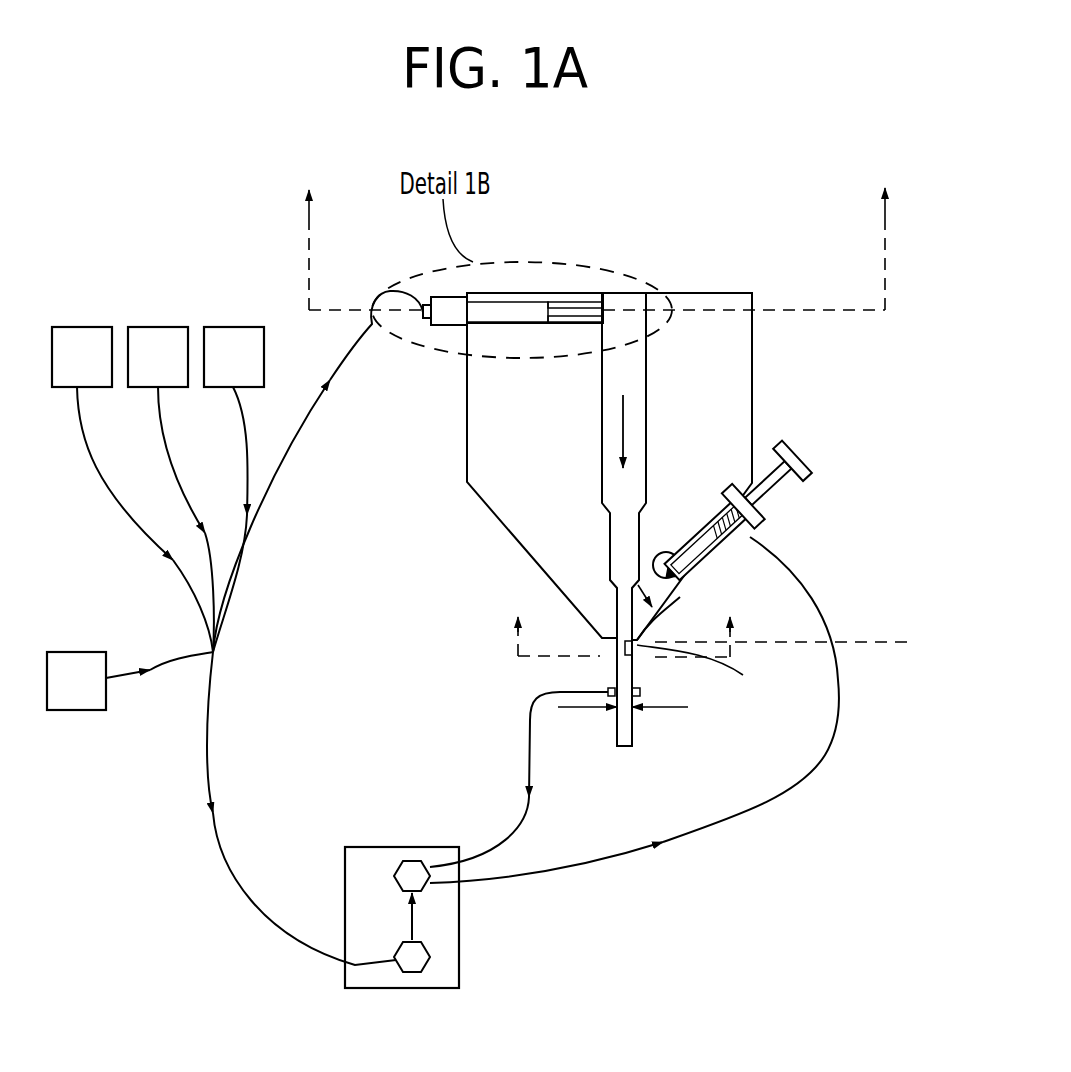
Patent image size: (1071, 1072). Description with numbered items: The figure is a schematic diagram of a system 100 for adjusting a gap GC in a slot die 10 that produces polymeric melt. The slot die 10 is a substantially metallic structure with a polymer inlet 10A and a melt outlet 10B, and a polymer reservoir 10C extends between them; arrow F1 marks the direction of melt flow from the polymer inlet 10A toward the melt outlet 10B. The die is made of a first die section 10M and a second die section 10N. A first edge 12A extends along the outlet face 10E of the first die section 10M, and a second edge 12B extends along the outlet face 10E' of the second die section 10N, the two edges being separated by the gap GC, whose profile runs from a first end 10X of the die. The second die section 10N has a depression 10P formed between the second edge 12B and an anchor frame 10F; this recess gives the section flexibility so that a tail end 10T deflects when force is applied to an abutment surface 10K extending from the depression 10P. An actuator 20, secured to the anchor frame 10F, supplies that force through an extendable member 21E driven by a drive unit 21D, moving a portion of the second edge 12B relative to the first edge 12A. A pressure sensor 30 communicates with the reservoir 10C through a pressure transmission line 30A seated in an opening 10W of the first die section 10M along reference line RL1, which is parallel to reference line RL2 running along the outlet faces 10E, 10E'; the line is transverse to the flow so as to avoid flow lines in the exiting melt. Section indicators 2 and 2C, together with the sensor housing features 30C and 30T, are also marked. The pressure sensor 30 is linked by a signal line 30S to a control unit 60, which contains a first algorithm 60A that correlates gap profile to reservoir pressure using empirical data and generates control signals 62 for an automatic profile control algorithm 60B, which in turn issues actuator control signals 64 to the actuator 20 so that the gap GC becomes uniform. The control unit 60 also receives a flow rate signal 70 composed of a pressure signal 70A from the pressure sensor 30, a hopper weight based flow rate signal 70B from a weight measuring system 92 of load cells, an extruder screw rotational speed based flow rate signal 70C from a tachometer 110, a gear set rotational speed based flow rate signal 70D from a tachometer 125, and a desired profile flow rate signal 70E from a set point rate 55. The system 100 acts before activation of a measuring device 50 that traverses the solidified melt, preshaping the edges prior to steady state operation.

The system for adjusting a gap 100 is at (262, 252).
The slot die 10 is at (462, 401).
The opening 10W is at (527, 300).
The polymer inlet 10A is at (628, 333).
The polymer reservoir 10C is at (618, 385).
The abutment surface 10K is at (672, 553).
The second die section 10N is at (670, 483).
The first die section 10M is at (527, 495).
The depression 10P is at (655, 555).
The tail end 10T is at (617, 587).
The first end 10X is at (606, 640).
The melt outlet 10B is at (635, 656).
The outlet face 10E is at (617, 771).
The outlet face 10E' is at (713, 665).
The anchor frame 10F is at (752, 537).
The first edge 12A is at (613, 662).
The second edge 12B is at (678, 598).
The actuator 20 is at (778, 497).
The drive unit 21D is at (778, 455).
The extendable member 21E is at (702, 561).
The pressure sensor 30 is at (587, 313).
The pressure transmission line 30A is at (563, 300).
The connector body 30C is at (392, 292).
The connector top 30T is at (447, 297).
The signal line 30S is at (369, 337).
The measuring device 50 is at (608, 690).
The set point rate 55 is at (76, 681).
The control unit 60 is at (365, 847).
The first algorithm 60A is at (425, 968).
The automatic profile control algorithm 60B is at (412, 859).
The control signals 62 is at (415, 925).
The actuator control signals 64 is at (772, 803).
The flow rate signal 70 is at (253, 906).
The pressure signal 70A is at (347, 353).
The hopper weight based flow rate signal 70B is at (93, 483).
The extruder screw rotational speed based flow rate signal 70C is at (158, 415).
The gear set rotational speed based flow rate signal 70D is at (247, 444).
The desired profile flow rate signal 70E is at (122, 685).
The system for measuring weight 92 is at (82, 357).
The tachometer 110 is at (158, 357).
The tachometer 125 is at (234, 357).
The direction of flow F1 is at (620, 414).
The gap GC is at (683, 709).
The reference line RL1 is at (788, 310).
The reference line RL2 is at (857, 643).
The section line 2 is at (624, 634).
The section line 2C is at (599, 244).